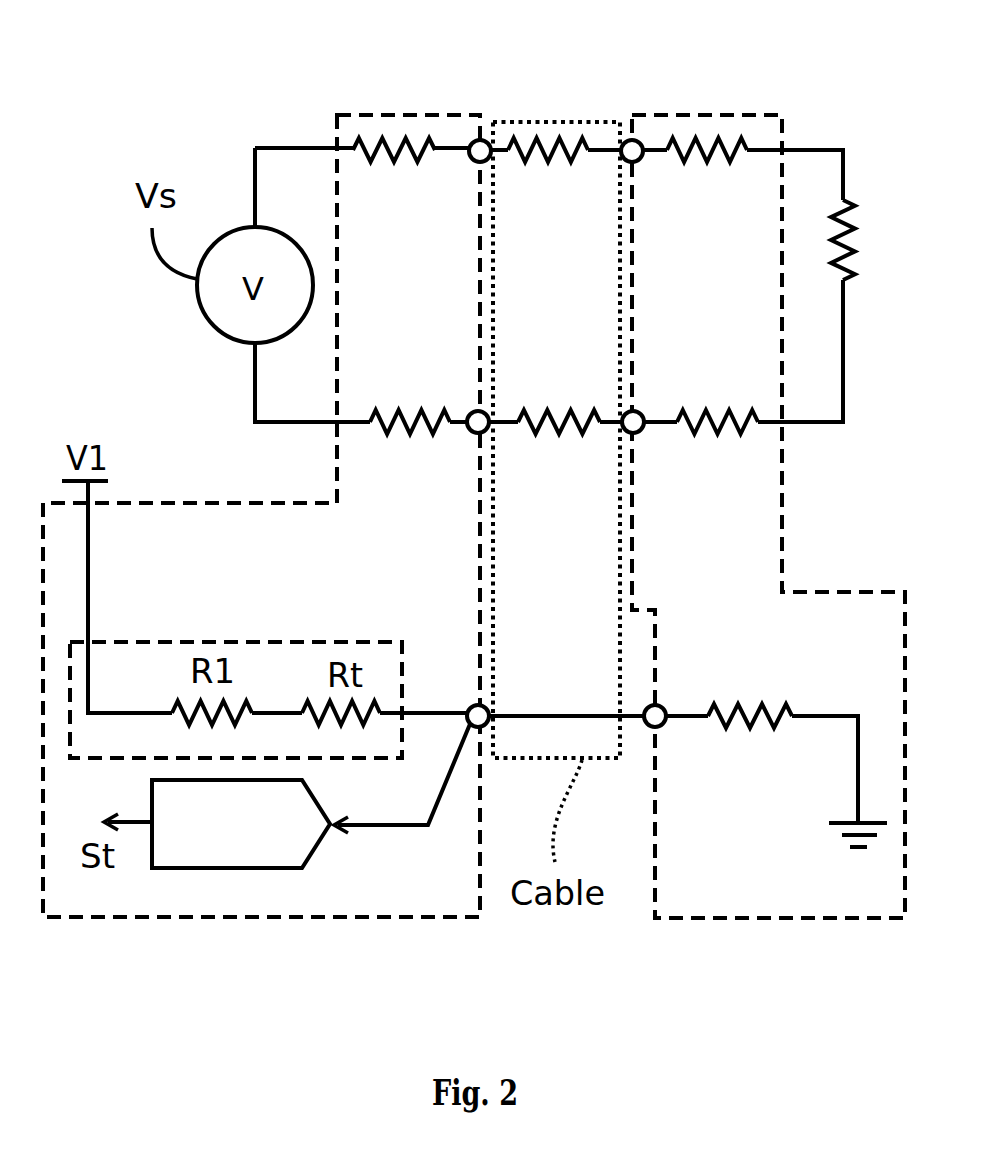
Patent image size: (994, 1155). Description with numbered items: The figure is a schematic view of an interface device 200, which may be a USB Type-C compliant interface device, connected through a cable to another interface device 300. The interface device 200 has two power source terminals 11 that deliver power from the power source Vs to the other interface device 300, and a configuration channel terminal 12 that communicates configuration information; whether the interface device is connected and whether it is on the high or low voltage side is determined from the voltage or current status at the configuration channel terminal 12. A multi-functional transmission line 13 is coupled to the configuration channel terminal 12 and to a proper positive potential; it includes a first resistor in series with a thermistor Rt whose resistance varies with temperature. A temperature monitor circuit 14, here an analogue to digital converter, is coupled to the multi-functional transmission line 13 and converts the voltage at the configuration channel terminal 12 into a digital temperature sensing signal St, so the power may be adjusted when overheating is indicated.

The interface device 200 is at (408, 113).
The interface device 300 is at (730, 117).
The power source terminal 11 is at (470, 160).
The configuration channel terminal 12 is at (468, 708).
The multi-functional transmission line 13 is at (355, 642).
The temperature monitor circuit 14 is at (325, 843).